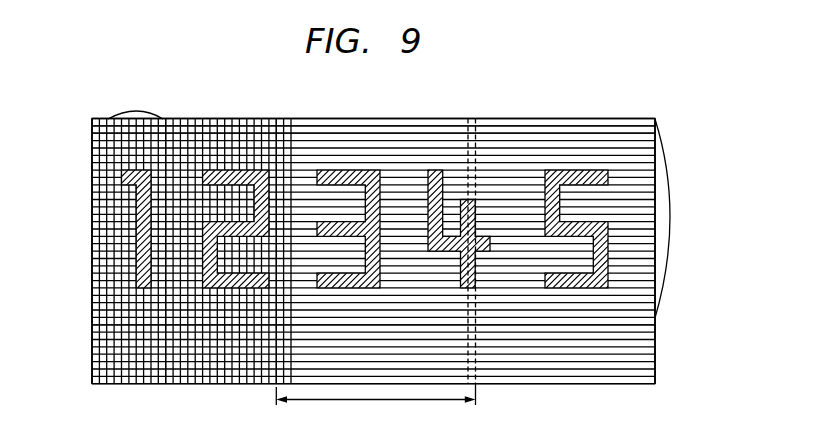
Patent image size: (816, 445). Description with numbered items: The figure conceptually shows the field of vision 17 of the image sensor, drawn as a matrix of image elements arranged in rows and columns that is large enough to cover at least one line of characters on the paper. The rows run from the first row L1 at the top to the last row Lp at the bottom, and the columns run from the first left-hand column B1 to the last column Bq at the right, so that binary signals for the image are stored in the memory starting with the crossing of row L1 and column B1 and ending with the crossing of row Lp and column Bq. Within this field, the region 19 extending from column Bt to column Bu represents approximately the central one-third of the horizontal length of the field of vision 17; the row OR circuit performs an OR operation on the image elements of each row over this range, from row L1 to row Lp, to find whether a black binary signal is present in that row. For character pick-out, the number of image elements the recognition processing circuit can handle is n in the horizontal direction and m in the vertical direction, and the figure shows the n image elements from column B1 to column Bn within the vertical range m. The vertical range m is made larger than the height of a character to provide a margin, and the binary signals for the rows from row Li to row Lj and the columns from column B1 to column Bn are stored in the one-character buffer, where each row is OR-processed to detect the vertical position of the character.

The column B1 is at (92, 119).
The number n of horizontal image elements n is at (135, 104).
The column Bn is at (167, 119).
The column Bt is at (276, 119).
The column Bu is at (472, 119).
The column Bq is at (653, 119).
The row L1 is at (92, 125).
The row Li is at (92, 134).
The row Lj is at (92, 323).
The row Lp is at (92, 382).
The number m of vertical image elements m is at (673, 218).
The central one-third region 19 is at (387, 400).
The field of vision 17 is at (607, 385).